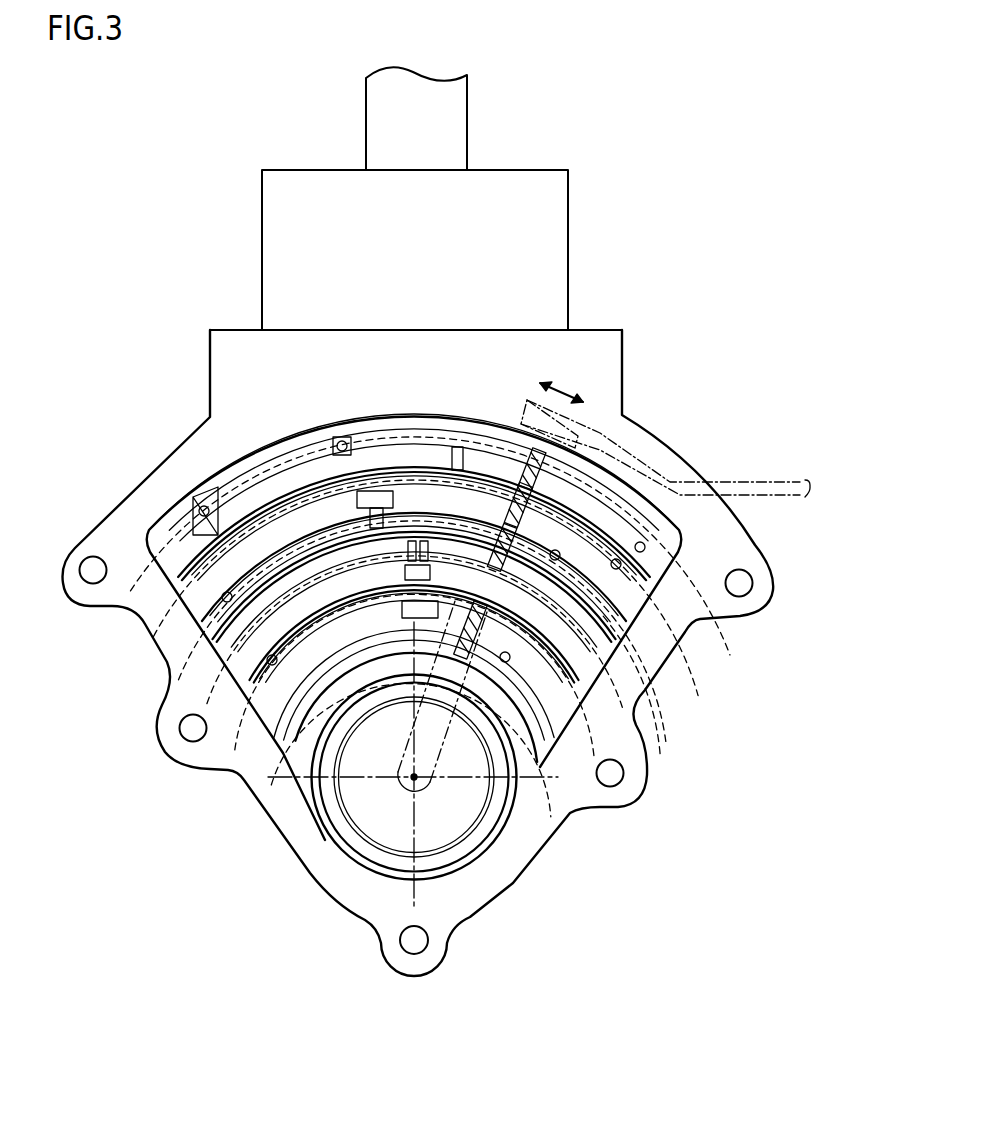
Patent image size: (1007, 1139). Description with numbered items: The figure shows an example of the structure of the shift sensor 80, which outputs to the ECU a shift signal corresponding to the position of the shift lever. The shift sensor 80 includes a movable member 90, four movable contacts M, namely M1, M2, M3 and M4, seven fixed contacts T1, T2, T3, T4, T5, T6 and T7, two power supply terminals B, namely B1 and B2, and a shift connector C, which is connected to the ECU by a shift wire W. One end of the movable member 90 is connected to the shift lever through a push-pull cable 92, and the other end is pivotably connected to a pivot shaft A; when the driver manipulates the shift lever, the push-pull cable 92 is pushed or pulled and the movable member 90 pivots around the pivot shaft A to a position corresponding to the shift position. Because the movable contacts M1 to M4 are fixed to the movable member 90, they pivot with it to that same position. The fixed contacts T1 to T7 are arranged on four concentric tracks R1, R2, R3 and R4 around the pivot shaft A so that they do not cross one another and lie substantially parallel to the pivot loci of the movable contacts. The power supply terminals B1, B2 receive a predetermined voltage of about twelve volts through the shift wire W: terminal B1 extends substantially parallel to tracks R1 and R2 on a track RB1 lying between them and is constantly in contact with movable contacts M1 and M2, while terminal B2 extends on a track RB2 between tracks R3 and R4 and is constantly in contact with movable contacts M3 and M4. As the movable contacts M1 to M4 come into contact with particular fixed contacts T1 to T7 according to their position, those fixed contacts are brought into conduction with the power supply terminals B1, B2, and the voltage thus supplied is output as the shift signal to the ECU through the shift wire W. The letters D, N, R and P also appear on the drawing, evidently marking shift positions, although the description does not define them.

The shift wire W is at (467, 133).
The shift connector C is at (568, 247).
The shift sensor 80 is at (429, 1069).
The disc plate D is at (414, 627).
The track R1 is at (730, 645).
The track RB1 is at (700, 685).
The track R2 is at (668, 727).
The track R3 is at (623, 697).
The track RB2 is at (593, 740).
The track R4 is at (553, 800).
The movable member 90 is at (445, 747).
The pivot shaft A is at (412, 779).
The nut N is at (364, 454).
The rod R is at (463, 426).
The fixed contact T1 is at (475, 470).
The fixed contact T2 is at (375, 491).
The fixed contact T3 is at (437, 546).
The fixed contact T4 is at (372, 555).
The fixed contact T5 is at (335, 492).
The fixed contact T6 is at (457, 512).
The fixed contact T7 is at (270, 662).
The power supply terminals B is at (169, 618).
The power supply terminal B1 is at (215, 556).
The power supply terminal B2 is at (285, 630).
The pivot/press position P is at (660, 438).
The push-pull cable 92 is at (760, 482).
The movable contacts M is at (667, 584).
The movable contact M1 is at (525, 495).
The movable contact M2 is at (510, 525).
The movable contact M3 is at (510, 612).
The movable contact M4 is at (505, 643).